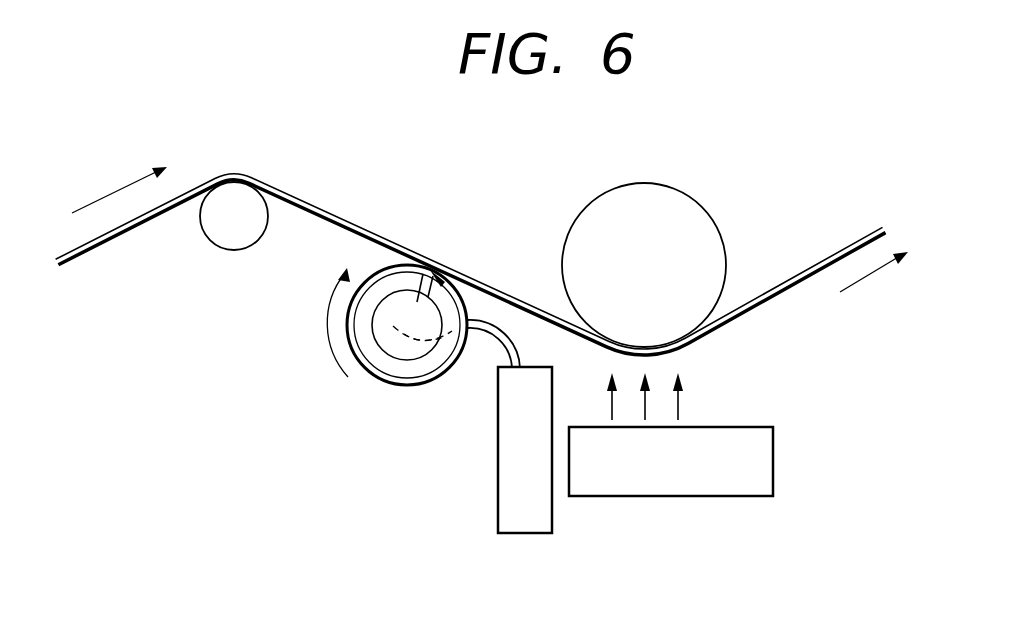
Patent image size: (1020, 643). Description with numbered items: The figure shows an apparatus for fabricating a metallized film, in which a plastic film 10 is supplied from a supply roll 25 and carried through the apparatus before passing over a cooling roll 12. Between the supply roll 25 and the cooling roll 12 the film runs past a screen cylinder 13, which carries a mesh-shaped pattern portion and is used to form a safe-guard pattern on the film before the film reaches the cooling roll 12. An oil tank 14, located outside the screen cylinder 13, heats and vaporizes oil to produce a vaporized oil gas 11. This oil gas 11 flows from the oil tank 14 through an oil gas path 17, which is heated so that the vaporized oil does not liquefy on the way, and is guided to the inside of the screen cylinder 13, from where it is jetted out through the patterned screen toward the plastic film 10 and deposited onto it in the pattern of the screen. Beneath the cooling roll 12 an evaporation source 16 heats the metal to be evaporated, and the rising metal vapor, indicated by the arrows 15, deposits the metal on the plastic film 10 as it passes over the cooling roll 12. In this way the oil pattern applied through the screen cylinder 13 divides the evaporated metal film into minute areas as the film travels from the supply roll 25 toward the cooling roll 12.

The plastic film 10 is at (317, 207).
The vaporized oil gas 11 is at (450, 277).
The cooling roll 12 is at (700, 212).
The screen cylinder 13 is at (375, 373).
The oil tank 14 is at (513, 533).
The evaporated oil vapor 15 is at (692, 395).
The evaporation source 16 is at (775, 467).
The oil gas path 17 is at (485, 335).
The supply roll 25 is at (230, 250).